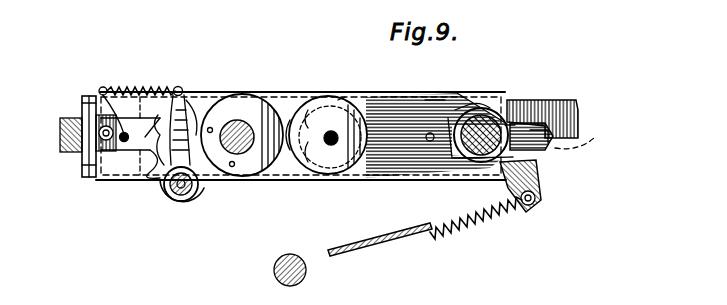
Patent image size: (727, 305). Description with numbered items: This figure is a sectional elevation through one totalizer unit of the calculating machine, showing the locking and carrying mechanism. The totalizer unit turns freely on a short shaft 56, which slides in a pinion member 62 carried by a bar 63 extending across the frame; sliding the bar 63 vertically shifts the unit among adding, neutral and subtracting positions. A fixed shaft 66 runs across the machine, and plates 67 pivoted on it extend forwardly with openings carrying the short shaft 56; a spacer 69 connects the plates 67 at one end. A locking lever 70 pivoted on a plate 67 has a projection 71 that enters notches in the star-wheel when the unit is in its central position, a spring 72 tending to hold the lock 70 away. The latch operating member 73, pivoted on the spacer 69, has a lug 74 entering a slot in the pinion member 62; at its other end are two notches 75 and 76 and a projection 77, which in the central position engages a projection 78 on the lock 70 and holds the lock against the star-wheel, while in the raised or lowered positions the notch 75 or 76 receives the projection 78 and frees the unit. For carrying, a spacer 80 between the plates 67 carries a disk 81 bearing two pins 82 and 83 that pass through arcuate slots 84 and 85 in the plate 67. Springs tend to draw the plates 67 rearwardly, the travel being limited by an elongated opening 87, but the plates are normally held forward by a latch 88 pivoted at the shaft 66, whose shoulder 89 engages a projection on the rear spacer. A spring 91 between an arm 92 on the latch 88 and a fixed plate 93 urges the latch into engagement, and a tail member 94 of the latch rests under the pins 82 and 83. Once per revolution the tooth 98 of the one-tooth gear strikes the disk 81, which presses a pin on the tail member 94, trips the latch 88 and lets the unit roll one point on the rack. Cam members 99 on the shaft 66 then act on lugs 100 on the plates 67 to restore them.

The short shaft 56 is at (208, 116).
The pinion member 62 is at (82, 103).
The bar 63 is at (60, 133).
The fixed shaft 66 is at (548, 102).
The plate 67 is at (432, 132).
The spacer 69 is at (104, 88).
The locking lever 70 is at (192, 112).
The projection 71 is at (238, 93).
The spring 72 is at (136, 86).
The latch operating member 73 is at (120, 142).
The lug 74 is at (84, 166).
The notch 75 is at (166, 160).
The notch 76 is at (190, 77).
The projection 77 is at (146, 136).
The projection 78 is at (192, 200).
The spacer 80 is at (328, 135).
The disk 81 is at (372, 89).
The pin 82 is at (428, 137).
The pin 83 is at (340, 98).
The arcuate slot 84 is at (384, 106).
The arcuate slot 85 is at (320, 181).
The elongated opening 87 is at (447, 84).
The latch 88 is at (578, 106).
The shoulder 89 is at (590, 134).
The spring 91 is at (486, 226).
The arm 92 is at (534, 183).
The plate 93 is at (396, 240).
The tail member 94 is at (392, 178).
The tooth 98 is at (294, 140).
The cam member 99 is at (500, 101).
The lug 100 is at (465, 112).